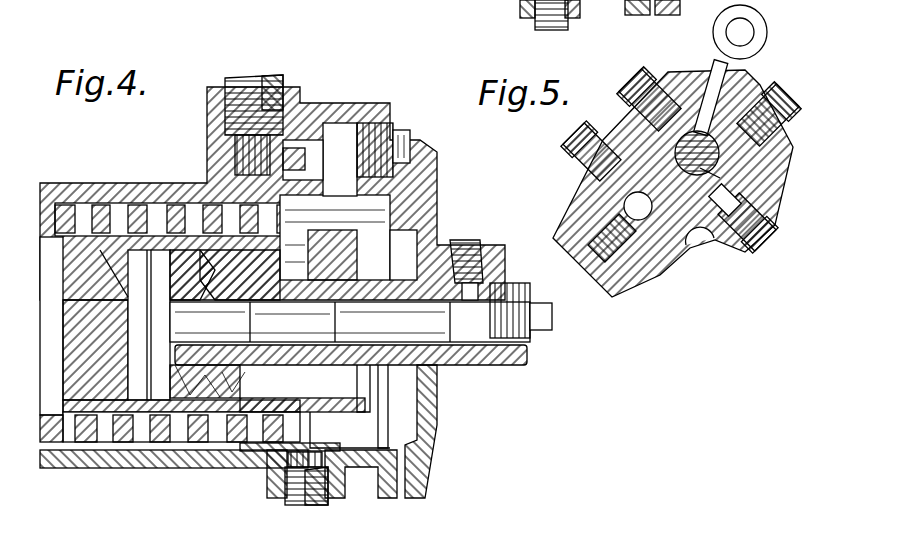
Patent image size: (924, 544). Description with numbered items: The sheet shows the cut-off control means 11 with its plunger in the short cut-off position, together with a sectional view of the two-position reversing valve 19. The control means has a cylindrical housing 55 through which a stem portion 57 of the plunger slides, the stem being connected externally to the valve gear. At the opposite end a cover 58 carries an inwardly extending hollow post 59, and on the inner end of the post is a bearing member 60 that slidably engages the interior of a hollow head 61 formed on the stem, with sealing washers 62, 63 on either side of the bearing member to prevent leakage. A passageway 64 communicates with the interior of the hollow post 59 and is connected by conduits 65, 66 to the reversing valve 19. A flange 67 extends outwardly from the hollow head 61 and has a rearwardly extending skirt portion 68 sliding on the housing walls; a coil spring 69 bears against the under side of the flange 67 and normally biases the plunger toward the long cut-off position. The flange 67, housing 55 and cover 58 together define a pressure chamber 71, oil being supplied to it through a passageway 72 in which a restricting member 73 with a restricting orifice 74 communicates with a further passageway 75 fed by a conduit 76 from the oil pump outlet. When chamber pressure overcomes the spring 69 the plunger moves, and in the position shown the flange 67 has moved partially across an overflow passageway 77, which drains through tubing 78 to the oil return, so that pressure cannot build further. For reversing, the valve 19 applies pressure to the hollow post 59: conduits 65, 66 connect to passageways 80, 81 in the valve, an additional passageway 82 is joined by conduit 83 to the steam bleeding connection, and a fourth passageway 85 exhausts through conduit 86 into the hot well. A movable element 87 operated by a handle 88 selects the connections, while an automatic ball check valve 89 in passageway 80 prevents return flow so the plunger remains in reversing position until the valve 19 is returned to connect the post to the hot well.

In FIG. 4, the cut-off control means 11 is at (100, 178).
In FIG. 4, the stem portion 57 is at (272, 193).
In FIG. 4, the coil spring 69 is at (143, 235).
In FIG. 4, the further passageway 75 is at (221, 155).
In FIG. 4, the bearing member 60 is at (130, 280).
In FIG. 4, the conduit 76 is at (250, 78).
In FIG. 4, the restricting orifice 74 is at (305, 118).
In FIG. 4, the restricting member 73 is at (348, 167).
In FIG. 4, the passageway 72 is at (383, 125).
In FIG. 4, the conduit 65 is at (460, 208).
In FIG. 5, the conduit 65 is at (568, 128).
In FIG. 4, the passageway 64 is at (521, 292).
In FIG. 4, the hollow post 59 is at (350, 357).
In FIG. 4, the pressure chamber 71 is at (418, 431).
In FIG. 4, the cover 58 is at (402, 458).
In FIG. 4, the flange 67 is at (350, 430).
In FIG. 4, the sealing washer 62 is at (164, 323).
In FIG. 4, the sealing washer 63 is at (240, 321).
In FIG. 4, the cylindrical housing 55 is at (190, 469).
In FIG. 4, the hollow head 61 is at (181, 447).
In FIG. 4, the skirt portion 68 is at (141, 454).
In FIG. 4, the overflow passageway 77 is at (308, 524).
In FIG. 5, the overflow passageway 77 is at (641, 10).
In FIG. 5, the tubing 78 is at (517, 15).
In FIG. 5, the additional passageway 82 is at (673, 166).
In FIG. 5, the conduit 83 is at (632, 80).
In FIG. 5, the conduit 86 is at (796, 112).
In FIG. 5, the fourth passageway 85 is at (721, 90).
In FIG. 5, the handle 88 is at (791, 11).
In FIG. 5, the passageway 80 is at (587, 191).
In FIG. 5, the movable element 87 is at (753, 167).
In FIG. 5, the passageway 81 is at (760, 197).
In FIG. 5, the conduit 66 is at (778, 262).
In FIG. 5, the automatic ball check valve 89 is at (635, 246).
In FIG. 5, the reversing valve 19 is at (708, 253).